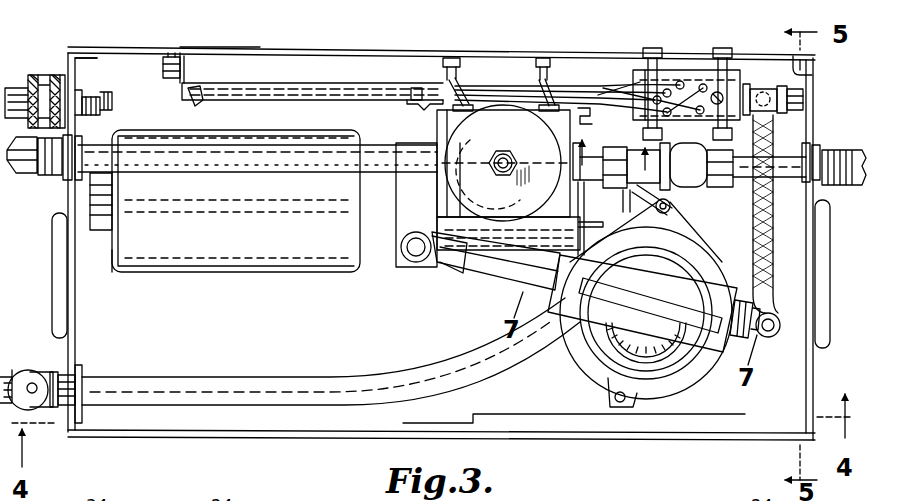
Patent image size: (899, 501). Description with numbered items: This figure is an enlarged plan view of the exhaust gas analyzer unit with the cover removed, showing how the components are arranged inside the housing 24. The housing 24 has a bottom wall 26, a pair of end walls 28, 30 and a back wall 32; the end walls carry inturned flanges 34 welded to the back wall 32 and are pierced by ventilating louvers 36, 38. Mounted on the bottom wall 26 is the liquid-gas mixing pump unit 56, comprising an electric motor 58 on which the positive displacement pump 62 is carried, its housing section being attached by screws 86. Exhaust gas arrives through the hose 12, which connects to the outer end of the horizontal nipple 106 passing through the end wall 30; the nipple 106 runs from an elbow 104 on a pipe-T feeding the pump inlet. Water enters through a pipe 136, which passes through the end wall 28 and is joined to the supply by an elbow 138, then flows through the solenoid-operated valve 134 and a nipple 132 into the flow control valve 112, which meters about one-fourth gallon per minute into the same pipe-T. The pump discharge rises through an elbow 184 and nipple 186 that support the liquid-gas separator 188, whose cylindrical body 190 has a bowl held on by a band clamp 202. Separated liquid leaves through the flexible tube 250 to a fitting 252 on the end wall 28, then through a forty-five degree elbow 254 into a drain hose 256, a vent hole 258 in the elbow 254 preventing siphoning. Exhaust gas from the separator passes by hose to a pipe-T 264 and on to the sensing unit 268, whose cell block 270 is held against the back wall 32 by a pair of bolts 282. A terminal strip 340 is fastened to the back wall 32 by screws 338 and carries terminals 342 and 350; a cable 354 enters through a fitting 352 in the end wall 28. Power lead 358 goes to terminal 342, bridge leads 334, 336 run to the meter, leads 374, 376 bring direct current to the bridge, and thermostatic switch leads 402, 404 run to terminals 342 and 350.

The hose 12 is at (840, 182).
The housing 24 is at (222, 47).
The bottom wall 26 is at (683, 429).
The end wall 28 is at (77, 298).
The end wall 30 is at (813, 110).
The back wall 32 is at (352, 50).
The inturned flanges 34 is at (88, 58).
The ventilating louvers 36 is at (52, 250).
The ventilating louvers 38 is at (831, 234).
The liquid-gas mixing pump unit 56 is at (300, 297).
The electric motor 58 is at (153, 274).
The positive displacement pump 62 is at (494, 232).
The screws 86 is at (466, 186).
The elbow 104 is at (697, 182).
The horizontal nipple 106 is at (773, 178).
The flow control valve 112 is at (578, 218).
The nipple 132 is at (565, 167).
The solenoid-operated valve 134 is at (430, 182).
The pipe 136 is at (218, 164).
The elbow 138 is at (25, 172).
The elbow 184 is at (424, 266).
The nipple 186 is at (524, 272).
The liquid-gas separator 188 is at (697, 380).
The cylindrical body 190 is at (587, 352).
The band clamp 202 is at (653, 382).
The flexible tube 250 is at (350, 380).
The fitting 252 is at (70, 364).
The 45° elbow 254 is at (40, 372).
The hose 256 is at (12, 372).
The vent hole 258 is at (33, 392).
The pipe-T 264 is at (748, 118).
The sensing unit 268 is at (680, 72).
The cell block 270 is at (734, 78).
The bolts 282 is at (648, 50).
The lead 334 is at (598, 95).
The lead 336 is at (620, 100).
The screws 338 is at (166, 80).
The terminal strip 340 is at (297, 52).
The terminal 342 is at (200, 80).
The terminal 350 is at (415, 82).
The fitting 352 is at (58, 76).
The cable 354 is at (92, 90).
The lead 358 is at (196, 99).
The lead 374 is at (603, 88).
The lead 376 is at (550, 112).
The lead 402 is at (462, 82).
The lead 404 is at (418, 100).